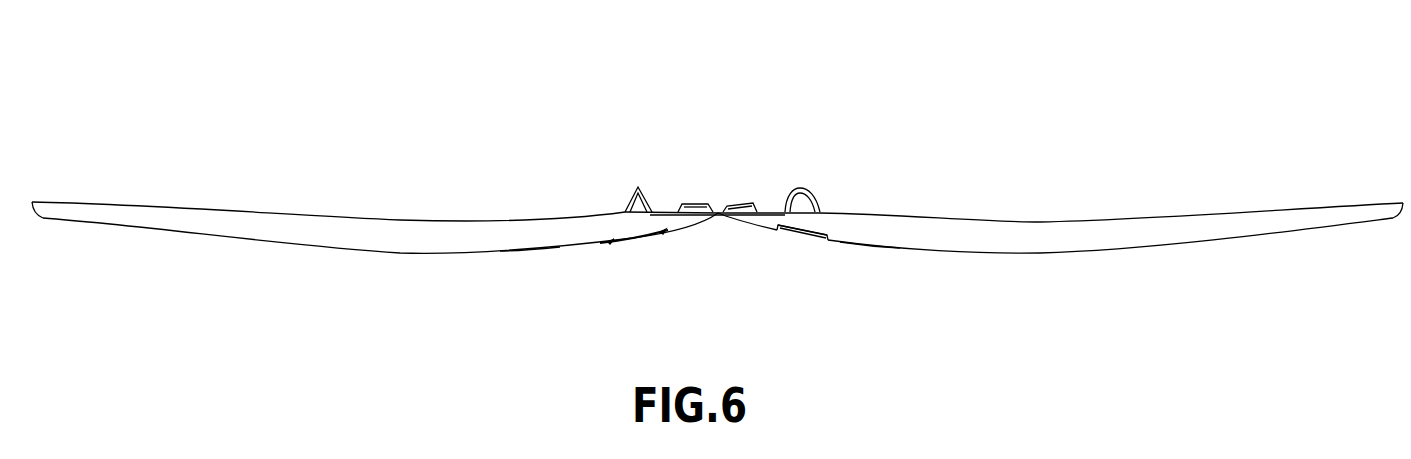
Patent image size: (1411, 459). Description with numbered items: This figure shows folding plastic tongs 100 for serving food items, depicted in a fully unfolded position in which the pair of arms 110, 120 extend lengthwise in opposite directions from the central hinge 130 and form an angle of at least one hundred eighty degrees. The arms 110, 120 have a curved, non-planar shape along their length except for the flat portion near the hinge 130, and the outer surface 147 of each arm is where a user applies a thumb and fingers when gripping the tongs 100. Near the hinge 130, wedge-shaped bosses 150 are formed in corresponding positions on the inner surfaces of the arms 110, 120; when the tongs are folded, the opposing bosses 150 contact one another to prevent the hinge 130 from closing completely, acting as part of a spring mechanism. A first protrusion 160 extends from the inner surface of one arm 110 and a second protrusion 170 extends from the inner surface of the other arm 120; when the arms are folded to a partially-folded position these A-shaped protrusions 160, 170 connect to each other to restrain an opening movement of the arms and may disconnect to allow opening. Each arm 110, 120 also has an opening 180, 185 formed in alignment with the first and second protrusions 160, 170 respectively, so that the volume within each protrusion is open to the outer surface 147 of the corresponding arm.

The folding plastic tongs 100 is at (1003, 50).
The first arm 110 is at (453, 253).
The second arm 120 is at (943, 250).
The hinge 130 is at (718, 213).
The outer surface 147 is at (553, 248).
The wedge-shaped boss 150 is at (688, 204).
The first protrusion 160 is at (638, 187).
The second protrusion 170 is at (800, 190).
The opening 180 is at (633, 238).
The opening 185 is at (807, 233).